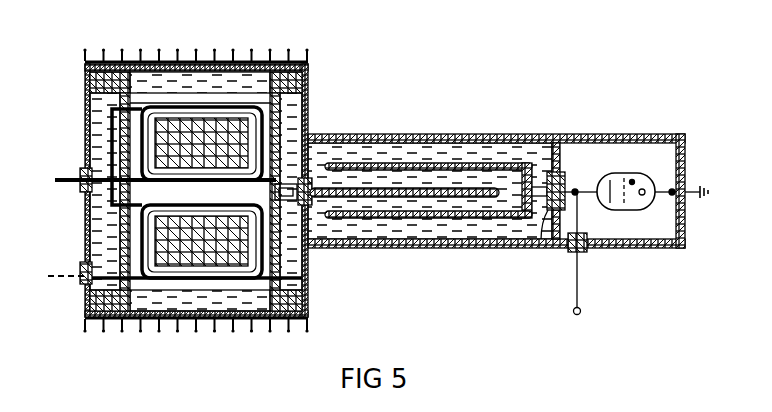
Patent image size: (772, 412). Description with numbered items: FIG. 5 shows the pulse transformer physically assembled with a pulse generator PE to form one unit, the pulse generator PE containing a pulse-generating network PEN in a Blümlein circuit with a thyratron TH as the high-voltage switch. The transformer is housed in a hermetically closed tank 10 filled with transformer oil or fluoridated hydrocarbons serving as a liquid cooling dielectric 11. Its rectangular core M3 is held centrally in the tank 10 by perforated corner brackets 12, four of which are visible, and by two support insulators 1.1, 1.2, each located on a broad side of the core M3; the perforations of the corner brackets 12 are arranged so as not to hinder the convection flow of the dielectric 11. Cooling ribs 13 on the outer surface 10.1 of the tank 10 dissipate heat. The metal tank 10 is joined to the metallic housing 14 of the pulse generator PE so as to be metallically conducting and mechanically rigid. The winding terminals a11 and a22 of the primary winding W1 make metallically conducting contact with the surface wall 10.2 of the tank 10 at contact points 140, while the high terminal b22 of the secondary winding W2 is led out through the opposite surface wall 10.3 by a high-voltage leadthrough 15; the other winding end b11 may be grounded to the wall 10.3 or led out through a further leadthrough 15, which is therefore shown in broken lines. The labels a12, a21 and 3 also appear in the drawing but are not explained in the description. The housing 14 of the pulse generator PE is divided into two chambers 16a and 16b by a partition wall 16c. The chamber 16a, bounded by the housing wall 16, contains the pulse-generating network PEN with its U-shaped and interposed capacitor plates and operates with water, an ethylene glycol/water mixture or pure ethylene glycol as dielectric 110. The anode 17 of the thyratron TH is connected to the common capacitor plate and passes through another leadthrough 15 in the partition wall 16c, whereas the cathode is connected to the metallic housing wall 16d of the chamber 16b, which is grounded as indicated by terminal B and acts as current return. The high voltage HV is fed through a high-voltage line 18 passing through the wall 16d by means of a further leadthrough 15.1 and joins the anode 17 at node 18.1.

The tank 10 is at (83, 98).
The outer surface of the tank 10.1 is at (85, 66).
The outer or surface wall of the tank 10.2 is at (308, 118).
The opposite outer or surface wall of the tank 10.3 is at (84, 212).
The cooling ribs 13 is at (138, 57).
The perforated corner brackets 12 is at (97, 80).
The winding terminal of the primary winding a22 is at (292, 89).
The winding terminal of the primary winding a11 is at (306, 297).
The conductor electrode a12 is at (428, 161).
The conductor electrode a21 is at (428, 214).
The cooling channel 3 is at (158, 93).
The liquid cooling dielectric 11 is at (100, 127).
The support insulator 1.1 is at (118, 233).
The support insulator 1.2 is at (306, 256).
The primary winding W1 is at (177, 204).
The secondary winding W2 is at (143, 137).
The core M3 is at (232, 155).
The upper or high terminal of the secondary winding b22 is at (102, 175).
The other winding end of the secondary winding b11 is at (102, 272).
The high-voltage leadthrough 15 is at (70, 179).
The contact points 140 is at (306, 106).
The chamber 16a is at (522, 152).
The chamber 16b is at (668, 226).
The partition wall 16c is at (560, 144).
The metallic housing wall 16d is at (652, 134).
The metallic housing of the pulse generator 14 is at (500, 132).
The housing wall 16 is at (497, 249).
The pulse-generating network PEN is at (443, 132).
The dielectric 110 is at (468, 229).
The node 18.1 is at (571, 189).
The anode 17 is at (587, 196).
The thyratron TH is at (633, 211).
The terminal at ground potential B is at (690, 191).
The pulse generator PE is at (725, 153).
The leadthrough 15.1 is at (580, 253).
The high-voltage line 18 is at (575, 287).
The high voltage HV is at (577, 333).